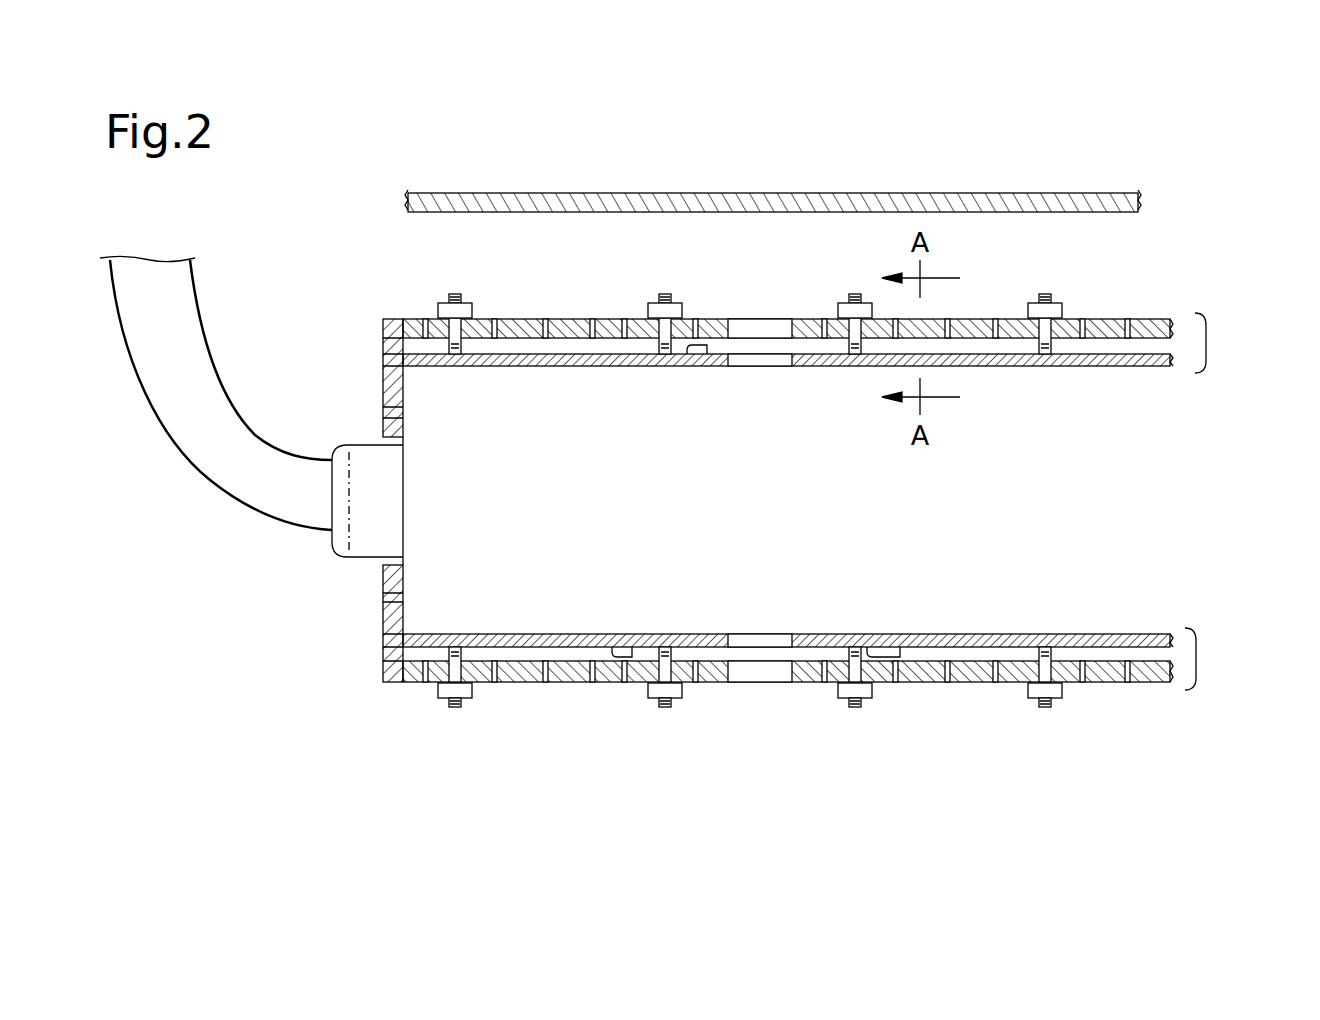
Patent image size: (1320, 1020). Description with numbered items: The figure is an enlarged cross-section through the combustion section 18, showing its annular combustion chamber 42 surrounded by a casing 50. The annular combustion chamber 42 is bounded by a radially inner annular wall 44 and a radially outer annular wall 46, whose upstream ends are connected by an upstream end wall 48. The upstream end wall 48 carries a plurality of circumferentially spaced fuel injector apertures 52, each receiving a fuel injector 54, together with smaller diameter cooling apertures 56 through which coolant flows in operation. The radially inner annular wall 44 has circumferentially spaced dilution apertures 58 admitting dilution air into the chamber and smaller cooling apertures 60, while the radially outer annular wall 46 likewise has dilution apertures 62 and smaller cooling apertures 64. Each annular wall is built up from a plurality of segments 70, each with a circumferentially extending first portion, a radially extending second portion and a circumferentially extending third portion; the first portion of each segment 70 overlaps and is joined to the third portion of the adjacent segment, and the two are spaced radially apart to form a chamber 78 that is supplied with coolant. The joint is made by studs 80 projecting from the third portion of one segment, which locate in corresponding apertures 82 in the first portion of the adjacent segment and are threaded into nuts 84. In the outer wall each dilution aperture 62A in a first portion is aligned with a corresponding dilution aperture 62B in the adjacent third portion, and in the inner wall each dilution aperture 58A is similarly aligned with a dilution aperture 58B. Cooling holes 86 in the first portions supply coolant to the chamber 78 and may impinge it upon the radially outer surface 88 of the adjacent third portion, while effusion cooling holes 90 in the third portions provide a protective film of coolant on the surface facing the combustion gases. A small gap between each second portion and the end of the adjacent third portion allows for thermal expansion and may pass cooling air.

The combustion section 18 is at (912, 175).
The casing 50 is at (808, 192).
The annular combustion chamber 42 is at (1150, 292).
The radially inner annular wall 44 is at (1202, 657).
The radially outer annular wall 46 is at (1212, 343).
The upstream end wall 48 is at (372, 672).
The fuel injector aperture 52 is at (380, 562).
The fuel injector 54 is at (167, 307).
The cooling aperture 56 is at (383, 412).
The dilution aperture 58 is at (752, 666).
The dilution aperture 58A is at (770, 683).
The dilution aperture 58B is at (765, 640).
The cooling aperture 60 is at (585, 683).
The dilution aperture 62 is at (770, 323).
The dilution aperture 62A is at (737, 330).
The dilution aperture 62B is at (790, 362).
The cooling aperture 64 is at (562, 320).
The segment 70 is at (1003, 367).
The chamber 78 is at (603, 320).
The stud 80 is at (1052, 352).
The aperture 82 is at (1080, 324).
The nut 84 is at (1045, 300).
The cooling hole 86 is at (997, 320).
The radially outer surface 88 is at (700, 357).
The effusion cooling hole 90 is at (598, 366).